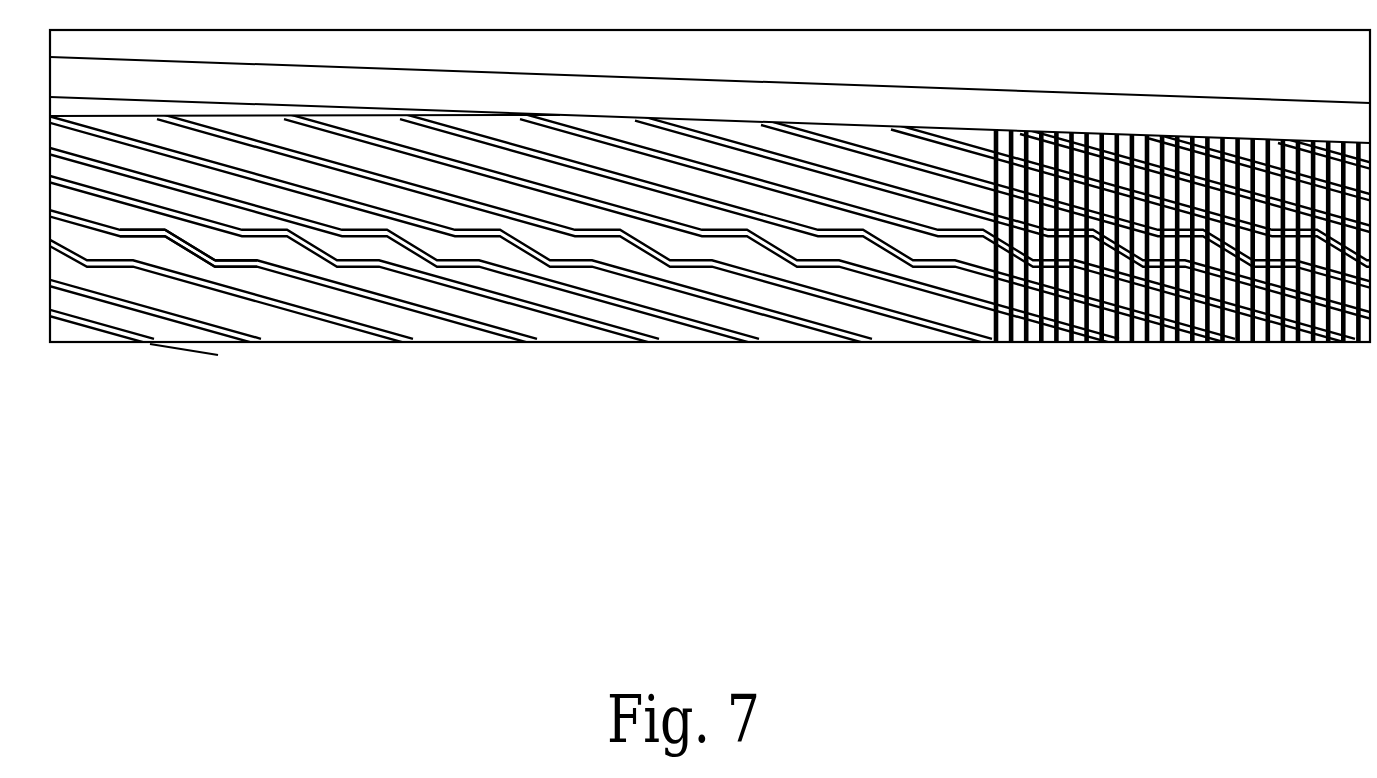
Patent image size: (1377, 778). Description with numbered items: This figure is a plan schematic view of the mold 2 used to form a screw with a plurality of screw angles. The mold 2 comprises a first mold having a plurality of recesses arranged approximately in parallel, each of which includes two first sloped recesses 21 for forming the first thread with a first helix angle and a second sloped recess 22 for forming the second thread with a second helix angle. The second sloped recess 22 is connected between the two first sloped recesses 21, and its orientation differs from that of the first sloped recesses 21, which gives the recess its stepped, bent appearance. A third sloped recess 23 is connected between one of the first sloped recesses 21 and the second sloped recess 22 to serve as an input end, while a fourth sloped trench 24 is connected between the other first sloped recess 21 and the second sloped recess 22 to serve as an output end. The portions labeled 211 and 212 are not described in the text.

The mold 2 is at (612, 290).
The first sloped recess 21 is at (110, 192).
The first bent section 211 is at (163, 233).
The second bent section 212 is at (217, 265).
The second sloped recess 22 is at (188, 252).
The third sloped recess 23 is at (143, 237).
The fourth sloped trench 24 is at (240, 268).